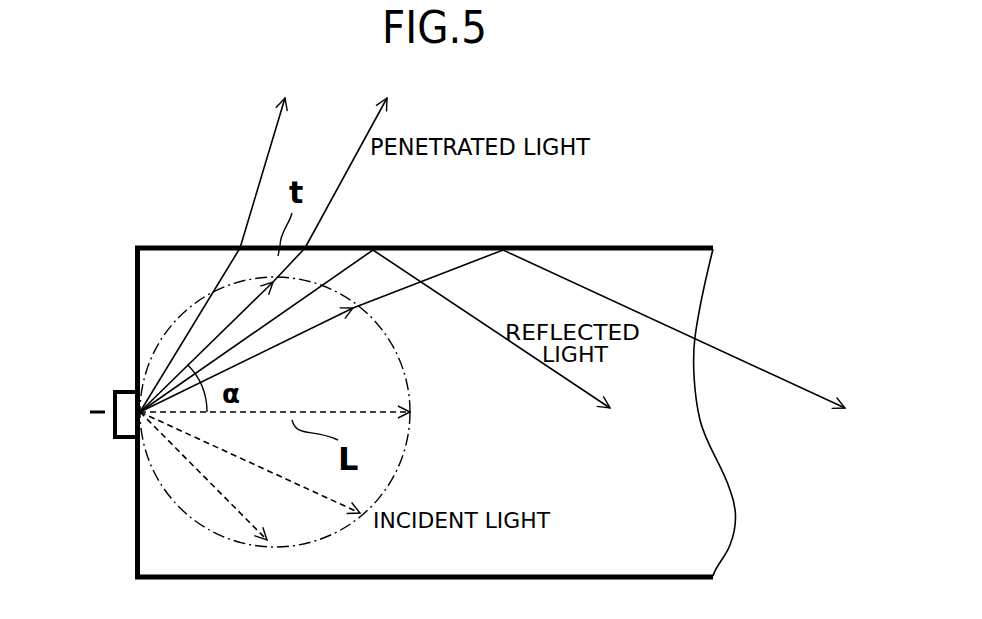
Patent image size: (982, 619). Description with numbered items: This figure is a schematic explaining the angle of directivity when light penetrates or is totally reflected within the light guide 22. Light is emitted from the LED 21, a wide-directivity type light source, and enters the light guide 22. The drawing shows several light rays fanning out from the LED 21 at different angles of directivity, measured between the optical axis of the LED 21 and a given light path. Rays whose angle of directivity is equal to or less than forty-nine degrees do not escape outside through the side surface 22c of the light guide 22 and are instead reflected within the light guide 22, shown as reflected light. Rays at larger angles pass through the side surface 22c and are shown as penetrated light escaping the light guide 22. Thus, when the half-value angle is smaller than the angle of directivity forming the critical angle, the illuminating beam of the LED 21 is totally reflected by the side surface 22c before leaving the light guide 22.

The LED 21 is at (118, 392).
The light guide 22 is at (627, 278).
The side surface 22c is at (186, 245).